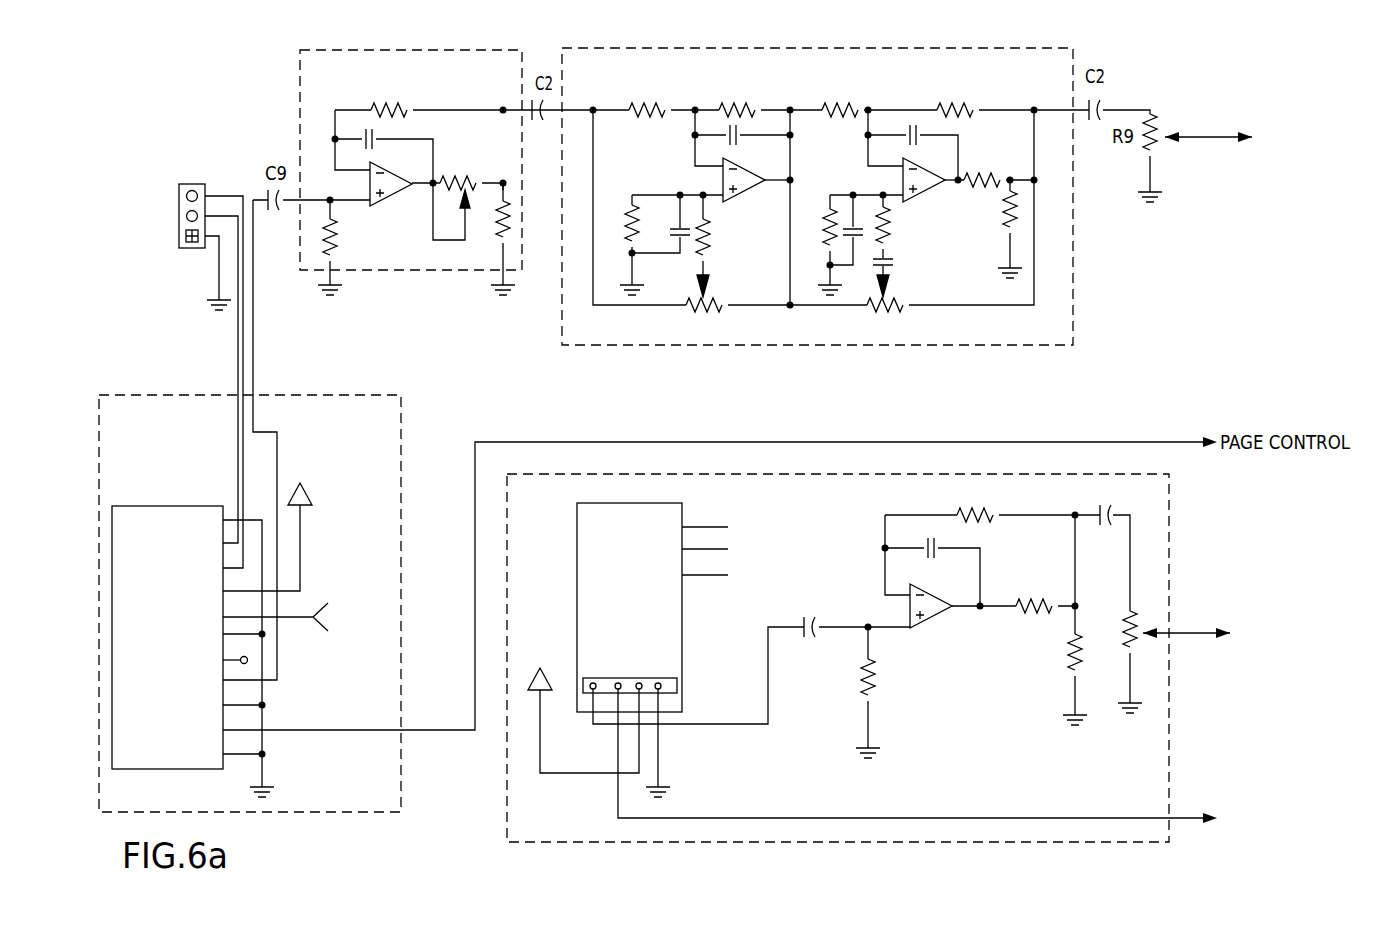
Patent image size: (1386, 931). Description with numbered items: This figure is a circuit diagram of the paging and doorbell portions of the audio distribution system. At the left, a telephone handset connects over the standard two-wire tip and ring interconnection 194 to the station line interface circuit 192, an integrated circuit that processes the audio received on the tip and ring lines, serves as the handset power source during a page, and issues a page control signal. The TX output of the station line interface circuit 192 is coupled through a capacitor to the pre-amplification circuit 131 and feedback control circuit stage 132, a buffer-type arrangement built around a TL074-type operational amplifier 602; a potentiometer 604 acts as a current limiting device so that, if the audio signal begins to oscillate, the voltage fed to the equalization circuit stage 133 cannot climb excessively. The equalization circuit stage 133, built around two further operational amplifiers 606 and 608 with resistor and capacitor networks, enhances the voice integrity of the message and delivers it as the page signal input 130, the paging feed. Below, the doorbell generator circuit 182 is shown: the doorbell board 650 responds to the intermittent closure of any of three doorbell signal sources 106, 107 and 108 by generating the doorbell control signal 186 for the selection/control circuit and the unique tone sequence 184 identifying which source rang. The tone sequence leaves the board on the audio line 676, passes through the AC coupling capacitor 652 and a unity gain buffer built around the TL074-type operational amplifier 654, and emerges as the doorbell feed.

The page signal input 130 is at (1272, 112).
The pre-amplification circuit 131 is at (399, 180).
The feedback control circuit stage 132 is at (298, 104).
The equalization circuit stage 133 is at (1073, 48).
The doorbell generator circuit 182 is at (497, 748).
The unique tone sequence 184 is at (1250, 609).
The doorbell control signal 186 is at (1192, 822).
The station line interface circuit 192 is at (401, 477).
The two-wire telephone tip and ring interconnection 194 is at (192, 183).
The doorbell signal source 106 is at (726, 528).
The doorbell signal source 107 is at (726, 550).
The doorbell signal source 108 is at (726, 576).
The operational amplifier 602 is at (385, 205).
The potentiometer 604 is at (450, 242).
The operational amplifier 606 is at (748, 190).
The operational amplifier 608 is at (930, 188).
The doorbell board 650 is at (668, 598).
The AC coupling capacitor 652 is at (812, 684).
The operational amplifier 654 is at (942, 620).
The audio line 676 is at (735, 727).